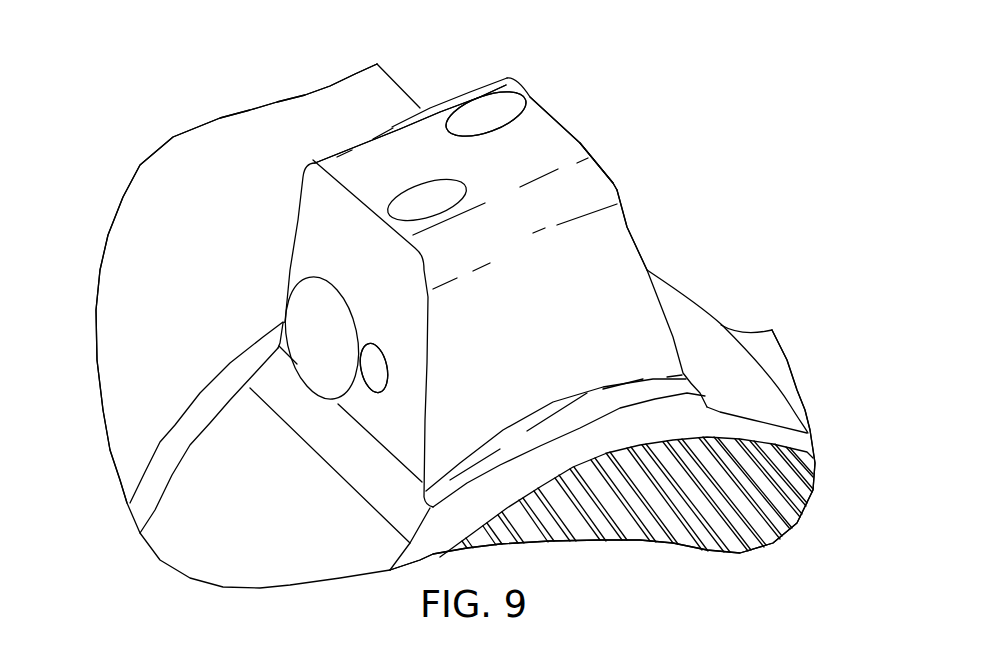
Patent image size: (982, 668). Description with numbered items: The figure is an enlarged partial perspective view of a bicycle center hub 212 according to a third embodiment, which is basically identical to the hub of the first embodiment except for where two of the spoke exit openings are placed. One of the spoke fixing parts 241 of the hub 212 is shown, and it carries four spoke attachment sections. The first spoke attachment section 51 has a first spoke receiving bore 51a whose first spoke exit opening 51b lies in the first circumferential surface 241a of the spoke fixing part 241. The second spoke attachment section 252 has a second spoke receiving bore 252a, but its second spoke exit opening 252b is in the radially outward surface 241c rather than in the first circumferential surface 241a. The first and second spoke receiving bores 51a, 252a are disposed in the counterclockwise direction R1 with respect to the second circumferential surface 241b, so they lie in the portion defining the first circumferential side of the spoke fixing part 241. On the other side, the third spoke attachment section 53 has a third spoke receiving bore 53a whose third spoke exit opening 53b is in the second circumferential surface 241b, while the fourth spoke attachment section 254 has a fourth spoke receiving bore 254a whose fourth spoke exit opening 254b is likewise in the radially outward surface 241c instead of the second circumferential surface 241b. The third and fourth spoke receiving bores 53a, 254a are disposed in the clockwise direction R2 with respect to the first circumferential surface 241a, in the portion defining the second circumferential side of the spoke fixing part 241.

The center hub 212 is at (690, 92).
The spoke fixing part 241 is at (438, 82).
The first circumferential surface 241a is at (320, 213).
The second circumferential surface 241b is at (543, 108).
The radially outward surface 241c is at (368, 160).
The third spoke receiving bore 53a is at (592, 136).
The third spoke exit opening 53b is at (626, 172).
The third spoke attachment section 53 is at (333, 368).
The fourth spoke attachment section 254 is at (284, 379).
The fourth spoke receiving bore 254a is at (477, 117).
The fourth spoke exit opening 254b is at (490, 94).
The second spoke attachment section 252 is at (670, 311).
The second spoke receiving bore 252a is at (417, 197).
The second spoke exit opening 252b is at (466, 195).
The first spoke attachment section 51 is at (685, 354).
The first spoke receiving bore 51a is at (387, 361).
The first spoke exit opening 51b is at (385, 390).
The counterclockwise direction R1 is at (733, 175).
The clockwise direction R2 is at (763, 173).